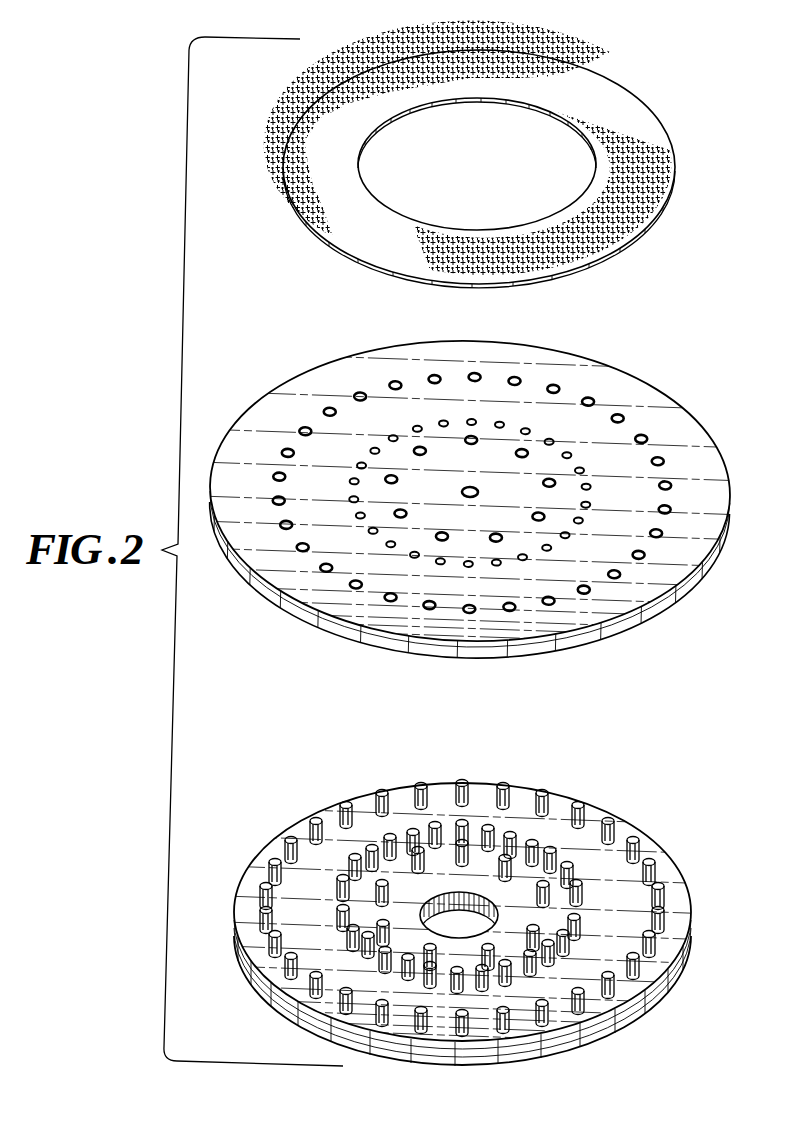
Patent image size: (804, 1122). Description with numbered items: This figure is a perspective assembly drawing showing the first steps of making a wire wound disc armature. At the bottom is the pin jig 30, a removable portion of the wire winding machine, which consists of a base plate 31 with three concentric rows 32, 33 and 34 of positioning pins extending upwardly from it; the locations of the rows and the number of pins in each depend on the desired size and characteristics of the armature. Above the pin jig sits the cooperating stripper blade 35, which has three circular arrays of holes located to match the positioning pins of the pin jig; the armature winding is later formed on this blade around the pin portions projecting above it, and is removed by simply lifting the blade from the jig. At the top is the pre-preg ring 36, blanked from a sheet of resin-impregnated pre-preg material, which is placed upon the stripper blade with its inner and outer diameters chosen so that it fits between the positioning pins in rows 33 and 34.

The pin jig 30 is at (692, 912).
The base plate 31 is at (564, 1027).
The row of positioning pins 32 is at (541, 884).
The row of positioning pins 33 is at (577, 930).
The row of positioning pins 34 is at (460, 788).
The stripper blade 35 is at (667, 583).
The pre-preg ring 36 is at (590, 248).